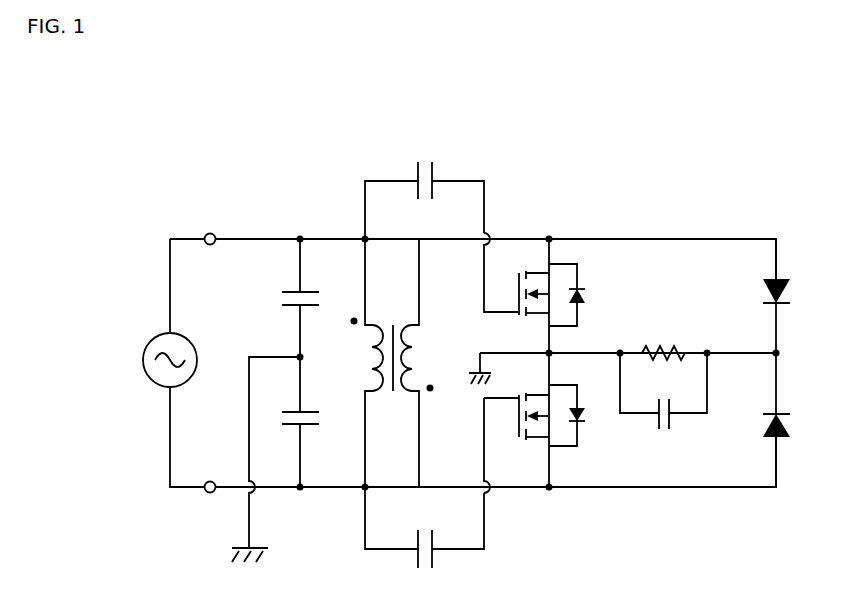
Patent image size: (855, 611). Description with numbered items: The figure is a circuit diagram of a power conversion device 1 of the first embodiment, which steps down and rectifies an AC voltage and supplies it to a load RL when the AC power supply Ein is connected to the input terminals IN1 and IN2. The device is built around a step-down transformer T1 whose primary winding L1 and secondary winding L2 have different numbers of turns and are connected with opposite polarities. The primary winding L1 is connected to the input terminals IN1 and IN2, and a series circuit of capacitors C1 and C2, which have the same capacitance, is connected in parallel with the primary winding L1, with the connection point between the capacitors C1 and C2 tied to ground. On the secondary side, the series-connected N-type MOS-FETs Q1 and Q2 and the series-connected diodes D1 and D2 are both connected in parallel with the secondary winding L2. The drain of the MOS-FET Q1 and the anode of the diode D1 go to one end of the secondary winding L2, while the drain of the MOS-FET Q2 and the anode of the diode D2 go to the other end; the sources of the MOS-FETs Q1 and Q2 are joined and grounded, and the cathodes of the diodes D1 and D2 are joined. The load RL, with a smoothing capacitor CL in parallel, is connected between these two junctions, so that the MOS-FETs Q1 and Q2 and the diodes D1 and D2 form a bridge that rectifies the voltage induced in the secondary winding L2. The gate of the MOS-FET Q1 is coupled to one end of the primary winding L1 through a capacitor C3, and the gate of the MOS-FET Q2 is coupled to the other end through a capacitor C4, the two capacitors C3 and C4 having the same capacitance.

The power conversion device 1 is at (279, 142).
The input terminal IN1 is at (210, 229).
The input terminal IN2 is at (210, 476).
The AC power supply Ein is at (163, 347).
The capacitor C1 is at (294, 298).
The capacitor C2 is at (294, 422).
The capacitor C3 is at (424, 188).
The capacitor C4 is at (424, 540).
The transformer T1 is at (393, 363).
The primary winding L1 is at (360, 363).
The secondary winding L2 is at (424, 363).
The MOS-FET Q1 is at (534, 293).
The MOS-FET Q2 is at (534, 423).
The load RL is at (663, 338).
The smoothing capacitor CL is at (663, 406).
The diode D1 is at (767, 296).
The diode D2 is at (767, 420).